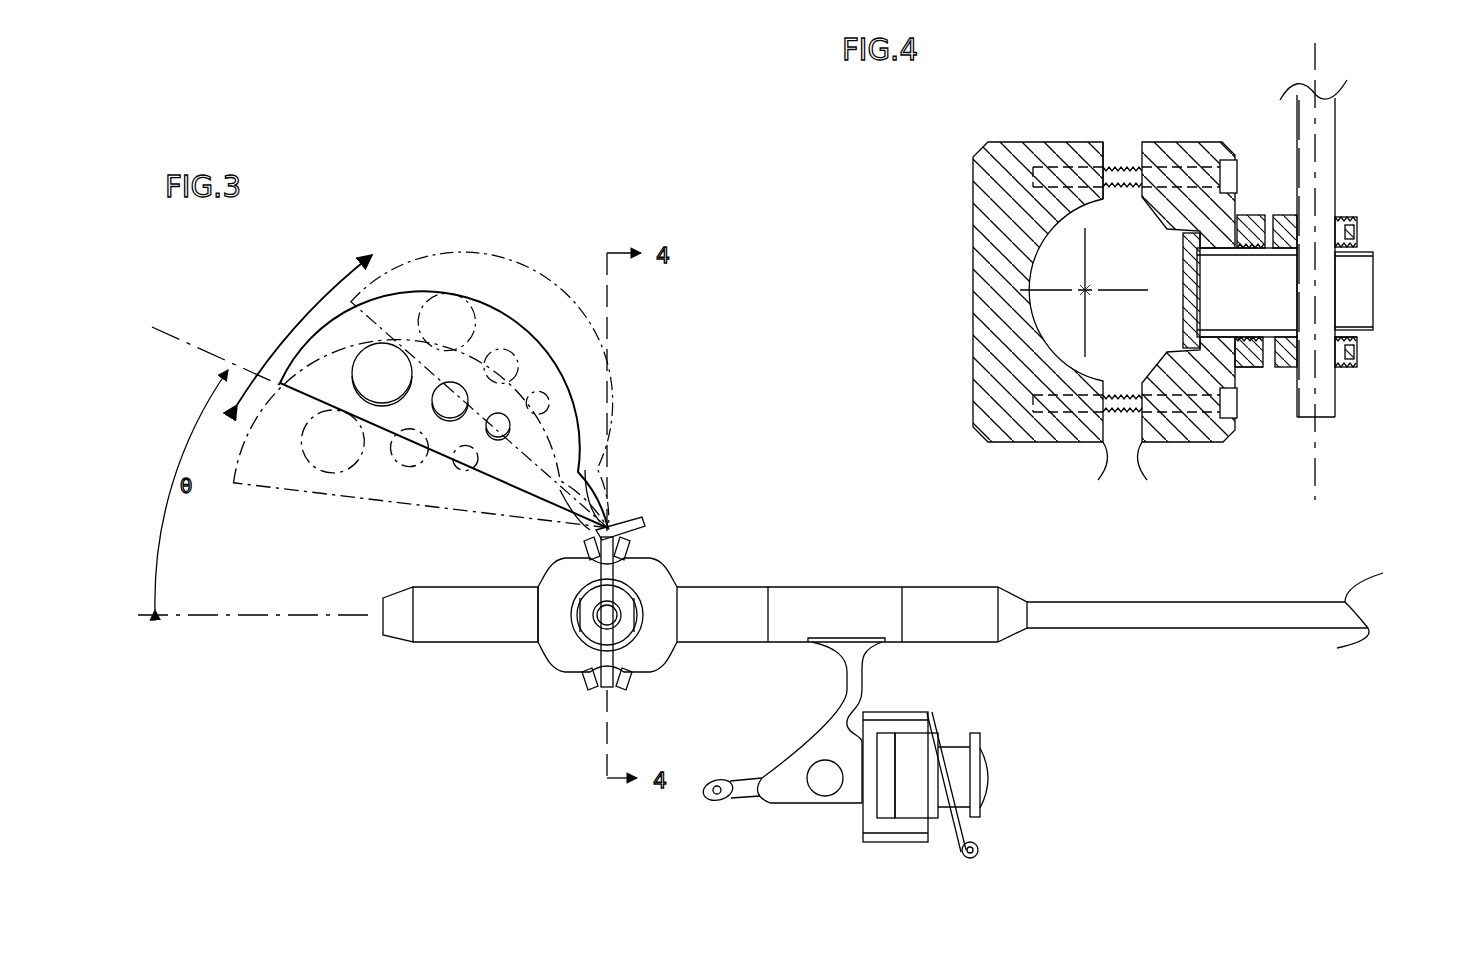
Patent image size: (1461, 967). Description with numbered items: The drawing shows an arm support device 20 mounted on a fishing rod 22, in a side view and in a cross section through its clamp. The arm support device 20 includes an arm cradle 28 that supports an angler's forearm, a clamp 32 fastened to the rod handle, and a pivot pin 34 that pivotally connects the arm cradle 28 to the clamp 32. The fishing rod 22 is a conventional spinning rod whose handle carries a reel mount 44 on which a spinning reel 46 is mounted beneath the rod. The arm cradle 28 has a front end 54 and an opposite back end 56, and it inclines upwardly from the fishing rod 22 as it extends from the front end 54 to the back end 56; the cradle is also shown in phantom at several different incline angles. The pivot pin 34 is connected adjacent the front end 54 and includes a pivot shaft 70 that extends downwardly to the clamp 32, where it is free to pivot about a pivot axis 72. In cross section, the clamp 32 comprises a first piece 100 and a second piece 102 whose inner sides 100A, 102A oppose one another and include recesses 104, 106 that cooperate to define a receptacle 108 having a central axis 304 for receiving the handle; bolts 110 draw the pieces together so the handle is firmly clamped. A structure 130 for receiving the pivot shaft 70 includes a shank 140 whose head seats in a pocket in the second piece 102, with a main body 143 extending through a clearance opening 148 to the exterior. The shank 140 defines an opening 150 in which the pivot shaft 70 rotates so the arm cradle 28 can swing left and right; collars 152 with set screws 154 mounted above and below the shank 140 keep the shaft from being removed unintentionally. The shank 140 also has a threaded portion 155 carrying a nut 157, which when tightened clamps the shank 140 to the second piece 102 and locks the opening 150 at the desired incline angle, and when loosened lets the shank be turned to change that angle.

In FIG. 3, the arm support device 20 is at (384, 220).
In FIG. 3, the fishing rod 22 is at (1054, 596).
In FIG. 3, the arm cradle 28 is at (330, 307).
In FIG. 4, the clamp 32 is at (970, 141).
In FIG. 3, the pivot pin 34 is at (612, 582).
In FIG. 4, the pivot pin 34 is at (1340, 130).
In FIG. 3, the reel mount 44 is at (846, 590).
In FIG. 3, the spinning reel 46 is at (858, 685).
In FIG. 3, the front end 54 is at (620, 526).
In FIG. 3, the back end 56 is at (282, 386).
In FIG. 3, the pivot shaft 70 is at (613, 683).
In FIG. 4, the pivot shaft 70 is at (1334, 180).
In FIG. 4, the pivot axis 72 is at (1317, 70).
In FIG. 4, the first piece 100 is at (1044, 141).
In FIG. 4, the inner side of first piece 100A is at (1082, 472).
In FIG. 4, the second piece 102 is at (1180, 141).
In FIG. 4, the inner side of second piece 102A is at (1151, 472).
In FIG. 4, the recess 104 is at (994, 292).
In FIG. 4, the recess 106 is at (1178, 292).
In FIG. 4, the receptacle 108 is at (1020, 233).
In FIG. 4, the bolts 110 is at (1120, 166).
In FIG. 4, the structure for receiving the pivot shaft 130 is at (1372, 342).
In FIG. 4, the shank 140 is at (1373, 249).
In FIG. 4, the main body 143 is at (1265, 247).
In FIG. 4, the clearance opening 148 is at (1213, 243).
In FIG. 4, the opening 150 is at (1338, 256).
In FIG. 4, the collars 152 is at (1290, 215).
In FIG. 4, the set screws 154 is at (1358, 222).
In FIG. 4, the threaded portion 155 is at (1248, 336).
In FIG. 4, the nut 157 is at (1253, 368).
In FIG. 4, the central axis 304 is at (1085, 290).